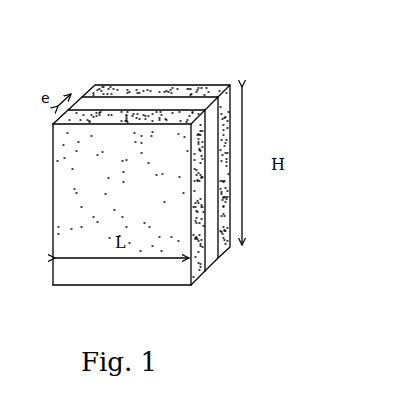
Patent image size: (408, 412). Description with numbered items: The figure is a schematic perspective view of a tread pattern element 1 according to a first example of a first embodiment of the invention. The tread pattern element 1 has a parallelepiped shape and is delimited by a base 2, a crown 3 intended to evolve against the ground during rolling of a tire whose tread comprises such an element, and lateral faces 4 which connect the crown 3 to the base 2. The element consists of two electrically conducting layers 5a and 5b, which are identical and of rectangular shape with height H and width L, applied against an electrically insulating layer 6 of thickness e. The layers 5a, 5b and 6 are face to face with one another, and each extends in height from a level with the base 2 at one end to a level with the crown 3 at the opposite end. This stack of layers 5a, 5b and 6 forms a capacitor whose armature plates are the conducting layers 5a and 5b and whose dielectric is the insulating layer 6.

The tread pattern element 1 is at (186, 178).
The base 2 is at (141, 289).
The crown 3 is at (207, 84).
The lateral faces 4 is at (135, 218).
The electrically conducting layer 5a is at (205, 262).
The electrically conducting layer 5b is at (228, 255).
The electrically insulating layer 6 is at (214, 258).